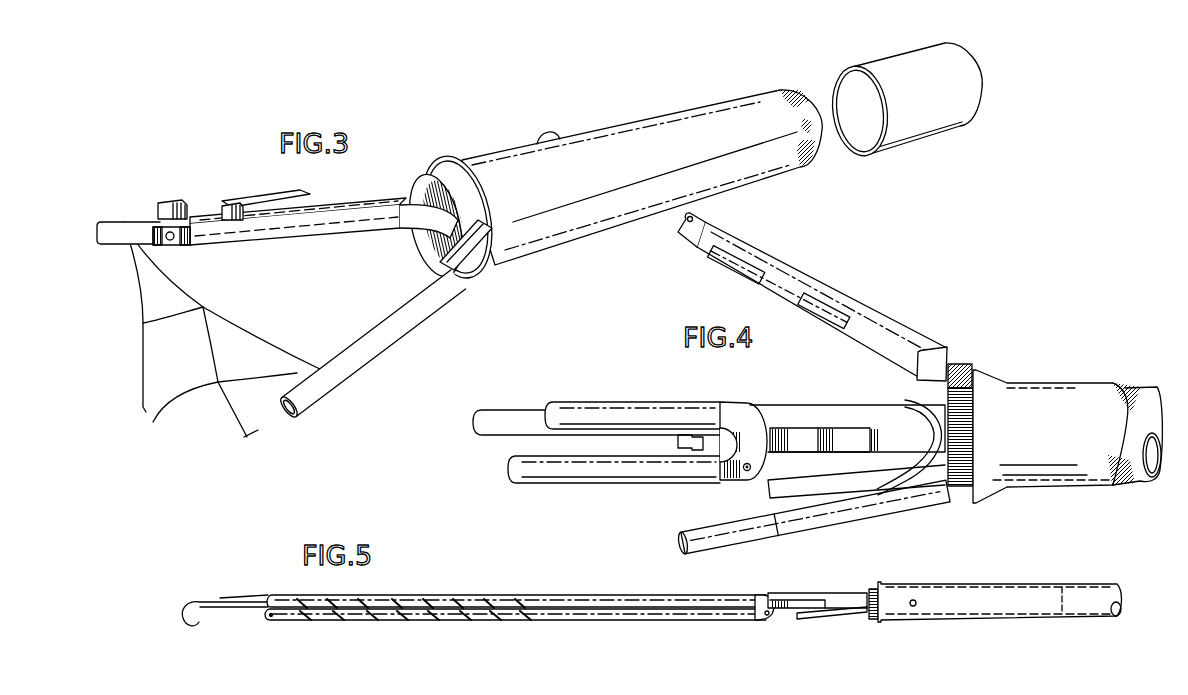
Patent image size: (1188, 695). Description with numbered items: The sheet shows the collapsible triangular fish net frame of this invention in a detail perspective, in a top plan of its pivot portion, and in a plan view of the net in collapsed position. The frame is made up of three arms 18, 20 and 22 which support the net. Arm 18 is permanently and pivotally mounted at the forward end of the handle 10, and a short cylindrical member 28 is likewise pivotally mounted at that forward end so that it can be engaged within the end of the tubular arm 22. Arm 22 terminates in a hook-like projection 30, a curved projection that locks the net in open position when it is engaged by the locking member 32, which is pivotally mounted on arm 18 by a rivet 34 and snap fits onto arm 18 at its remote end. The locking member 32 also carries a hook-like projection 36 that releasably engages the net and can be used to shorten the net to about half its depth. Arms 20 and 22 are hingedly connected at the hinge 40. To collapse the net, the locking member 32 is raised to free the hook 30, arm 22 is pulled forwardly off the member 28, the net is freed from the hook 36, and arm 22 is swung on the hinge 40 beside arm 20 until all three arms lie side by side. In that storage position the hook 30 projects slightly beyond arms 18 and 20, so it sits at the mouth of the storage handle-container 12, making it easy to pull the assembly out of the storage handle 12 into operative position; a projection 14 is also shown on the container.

In FIG. 3, the handle 10 is at (450, 173).
In FIG. 3, the storage handle-container 12 is at (681, 118).
In FIG. 4, the storage handle-container 12 is at (1020, 395).
In FIG. 5, the storage handle-container 12 is at (1090, 605).
In FIG. 3, the projection 14 is at (546, 136).
In FIG. 3, the arm 18 is at (114, 222).
In FIG. 4, the arm 18 is at (511, 408).
In FIG. 5, the arm 18 is at (797, 594).
In FIG. 4, the arm 20 is at (636, 476).
In FIG. 5, the arm 20 is at (564, 619).
In FIG. 3, the arm 22 is at (330, 376).
In FIG. 4, the arm 22 is at (615, 408).
In FIG. 5, the arm 22 is at (495, 594).
In FIG. 3, the short cylindrical member 28 is at (463, 272).
In FIG. 4, the short cylindrical member 28 is at (832, 508).
In FIG. 5, the short cylindrical member 28 is at (857, 613).
In FIG. 3, the hook-like projection 30 is at (405, 220).
In FIG. 4, the hook-like projection 30 is at (913, 400).
In FIG. 5, the hook-like projection 30 is at (186, 606).
In FIG. 3, the locking member 32 is at (362, 199).
In FIG. 4, the locking member 32 is at (770, 284).
In FIG. 3, the rivet 34 is at (180, 246).
In FIG. 3, the hook-like projection 36 is at (250, 188).
In FIG. 4, the hinge 40 is at (733, 404).